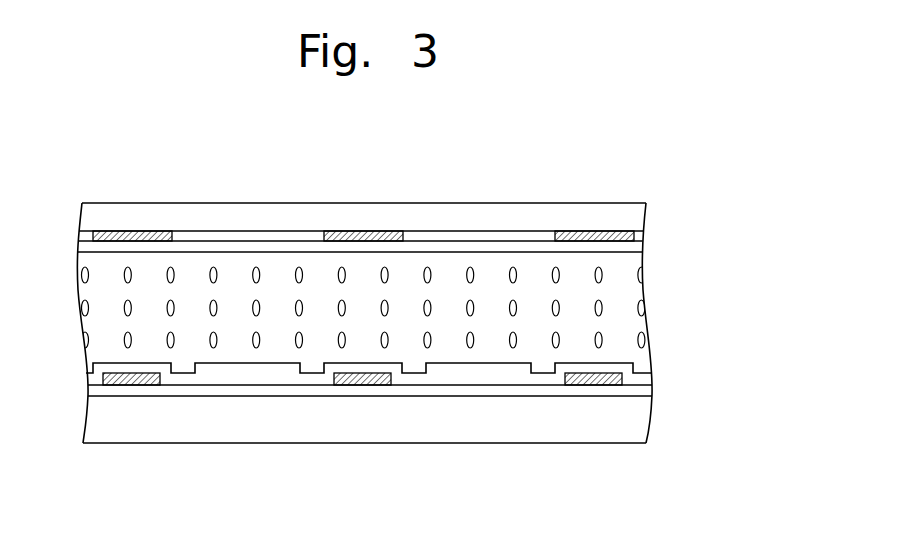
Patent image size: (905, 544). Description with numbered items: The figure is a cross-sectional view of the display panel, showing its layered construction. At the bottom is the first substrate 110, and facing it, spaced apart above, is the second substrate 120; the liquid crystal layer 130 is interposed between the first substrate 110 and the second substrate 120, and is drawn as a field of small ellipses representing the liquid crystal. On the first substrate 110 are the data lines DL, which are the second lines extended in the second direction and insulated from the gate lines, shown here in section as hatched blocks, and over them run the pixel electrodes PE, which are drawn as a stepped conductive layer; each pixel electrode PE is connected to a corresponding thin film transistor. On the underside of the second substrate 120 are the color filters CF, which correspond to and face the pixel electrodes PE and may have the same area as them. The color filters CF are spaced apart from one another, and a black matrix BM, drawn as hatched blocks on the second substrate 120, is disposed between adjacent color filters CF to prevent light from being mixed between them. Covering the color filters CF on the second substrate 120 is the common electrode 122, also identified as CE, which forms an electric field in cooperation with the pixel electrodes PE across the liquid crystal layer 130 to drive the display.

The second substrate 120 is at (637, 214).
The common electrode 122 is at (637, 248).
The liquid crystal layer 130 is at (650, 342).
The first substrate 110 is at (640, 423).
The color filter CF is at (247, 236).
The common electrode CE is at (482, 247).
The black matrix BM is at (587, 236).
The data line DL is at (132, 385).
The pixel electrode PE is at (247, 370).